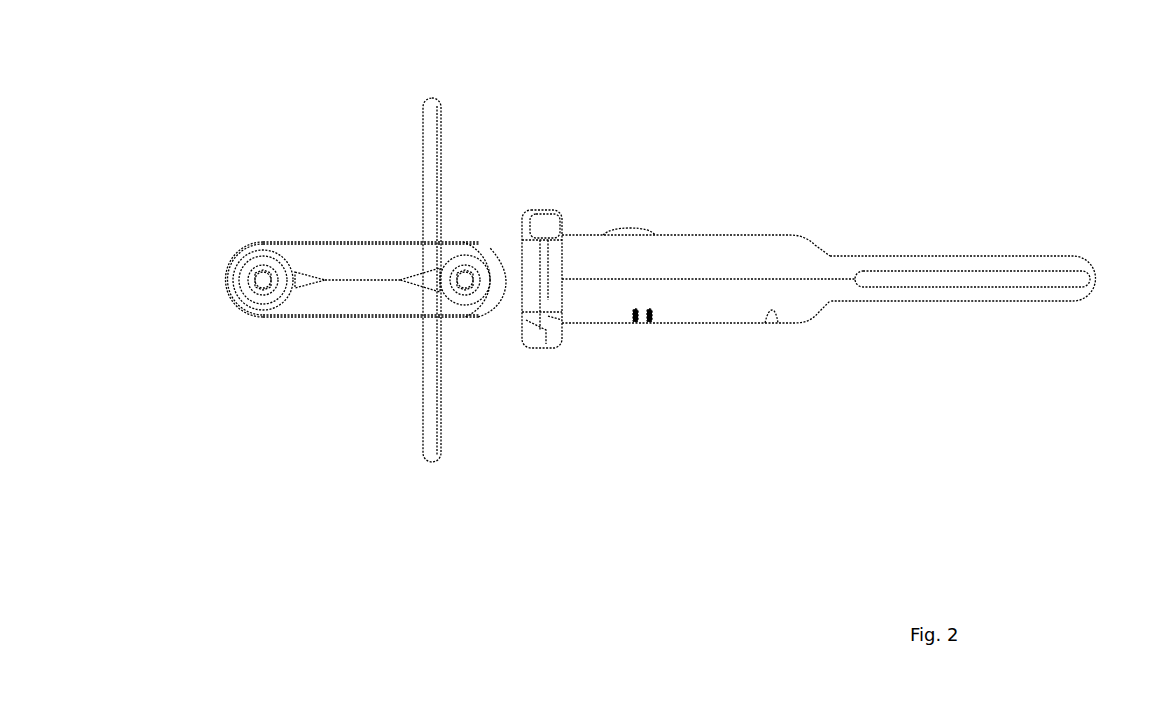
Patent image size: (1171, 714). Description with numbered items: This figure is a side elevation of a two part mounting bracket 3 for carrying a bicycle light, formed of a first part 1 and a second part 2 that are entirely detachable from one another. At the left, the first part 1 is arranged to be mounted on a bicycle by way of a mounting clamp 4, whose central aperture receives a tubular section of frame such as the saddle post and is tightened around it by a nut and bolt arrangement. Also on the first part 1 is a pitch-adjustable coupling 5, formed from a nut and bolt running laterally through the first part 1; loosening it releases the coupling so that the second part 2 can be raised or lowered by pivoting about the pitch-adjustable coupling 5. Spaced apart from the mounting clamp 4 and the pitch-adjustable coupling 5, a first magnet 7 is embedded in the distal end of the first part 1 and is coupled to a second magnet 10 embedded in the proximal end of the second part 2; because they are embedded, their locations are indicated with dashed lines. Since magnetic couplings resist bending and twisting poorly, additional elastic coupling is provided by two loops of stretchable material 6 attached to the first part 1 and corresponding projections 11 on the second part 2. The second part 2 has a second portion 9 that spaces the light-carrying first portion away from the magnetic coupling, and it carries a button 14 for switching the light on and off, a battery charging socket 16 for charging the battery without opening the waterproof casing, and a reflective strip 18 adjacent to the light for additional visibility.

The first part 1 is at (210, 180).
The second part 2 is at (881, 102).
The two part mounting bracket 3 is at (781, 534).
The mounting clamp 4 is at (351, 297).
The pitch-adjustable coupling 5 is at (465, 285).
The loops of stretchable material 6 is at (432, 135).
The first magnet 7 is at (518, 262).
The second portion 9 is at (808, 300).
The second magnet 10 is at (540, 272).
The projections 11 is at (538, 335).
The button 14 is at (628, 233).
The battery charging socket 16 is at (638, 322).
The reflective strip 18 is at (1068, 282).